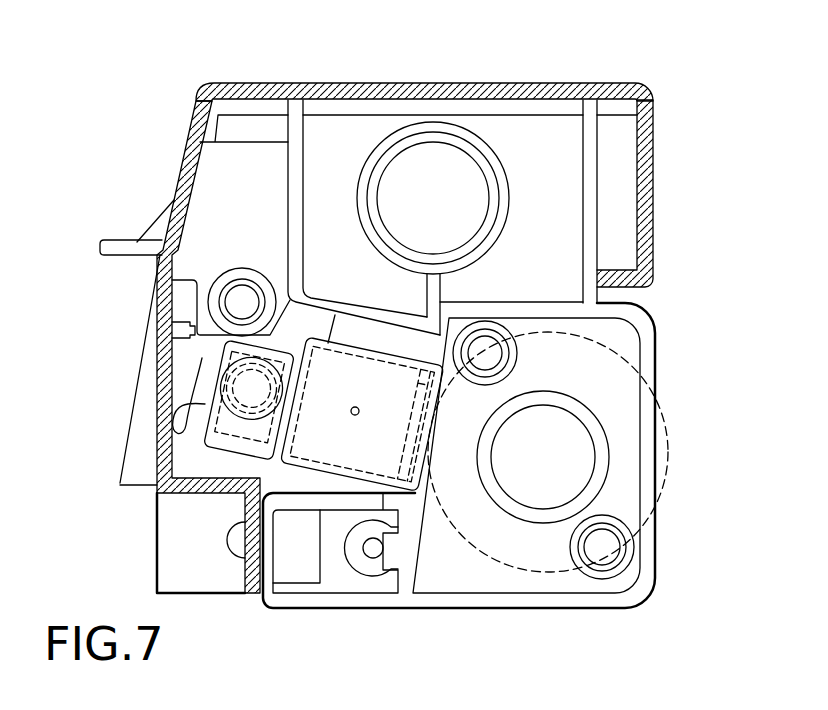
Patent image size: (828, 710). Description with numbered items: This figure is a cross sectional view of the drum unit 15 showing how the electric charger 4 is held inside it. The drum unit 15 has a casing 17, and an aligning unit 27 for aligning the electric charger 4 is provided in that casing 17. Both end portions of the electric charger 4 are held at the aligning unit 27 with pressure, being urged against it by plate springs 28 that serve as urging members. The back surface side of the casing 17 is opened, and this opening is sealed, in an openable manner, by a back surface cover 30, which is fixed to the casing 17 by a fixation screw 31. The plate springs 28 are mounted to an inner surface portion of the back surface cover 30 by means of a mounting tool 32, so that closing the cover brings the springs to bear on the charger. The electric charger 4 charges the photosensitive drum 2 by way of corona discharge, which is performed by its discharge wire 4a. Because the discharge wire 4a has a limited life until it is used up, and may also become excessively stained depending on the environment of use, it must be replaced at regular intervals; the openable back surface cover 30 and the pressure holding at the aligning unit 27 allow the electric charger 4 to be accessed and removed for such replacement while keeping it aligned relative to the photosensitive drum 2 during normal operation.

The photosensitive drum 2 is at (616, 387).
The electric charger 4 is at (335, 448).
The discharge wire 4a is at (359, 409).
The drum unit 15 is at (418, 82).
The casing 17 is at (252, 92).
The aligning unit 27 is at (397, 497).
The plate spring 28 is at (175, 430).
The back surface cover 30 is at (160, 358).
The fixation screw 31 is at (228, 551).
The mounting tool 32 is at (185, 330).